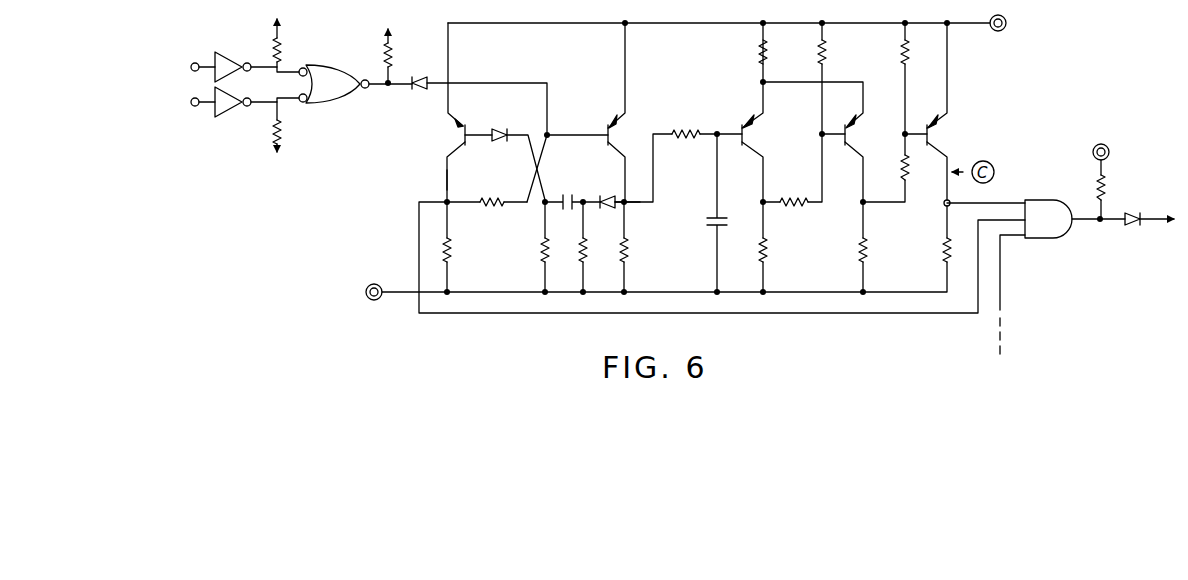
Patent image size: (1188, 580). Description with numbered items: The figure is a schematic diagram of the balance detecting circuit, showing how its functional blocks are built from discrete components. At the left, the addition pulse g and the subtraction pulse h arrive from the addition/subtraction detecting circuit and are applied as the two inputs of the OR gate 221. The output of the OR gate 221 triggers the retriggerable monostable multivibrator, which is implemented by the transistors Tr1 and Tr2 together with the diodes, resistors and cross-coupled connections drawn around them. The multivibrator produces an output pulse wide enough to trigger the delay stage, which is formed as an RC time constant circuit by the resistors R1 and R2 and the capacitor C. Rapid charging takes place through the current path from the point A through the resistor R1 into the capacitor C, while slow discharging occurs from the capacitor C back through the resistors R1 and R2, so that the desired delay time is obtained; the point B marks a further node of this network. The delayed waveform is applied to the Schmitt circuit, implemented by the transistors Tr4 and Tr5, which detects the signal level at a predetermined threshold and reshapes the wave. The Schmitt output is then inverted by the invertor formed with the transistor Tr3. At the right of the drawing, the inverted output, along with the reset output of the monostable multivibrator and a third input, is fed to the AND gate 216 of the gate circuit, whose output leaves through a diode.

The addition pulse g is at (234, 67).
The subtraction pulse h is at (234, 102).
The OR gate 221 is at (331, 118).
The transistor TR1 Tr1 is at (460, 131).
The transistor TR2 Tr2 is at (616, 126).
The transistor TR3 Tr3 is at (932, 128).
The transistor TR4 Tr4 is at (850, 128).
The transistor TR5 Tr5 is at (747, 130).
The resistor R1 is at (684, 125).
The resistor R2 is at (632, 263).
The capacitor C is at (725, 222).
The point A is at (633, 208).
The point B is at (444, 180).
The AND gate 216 is at (1048, 240).